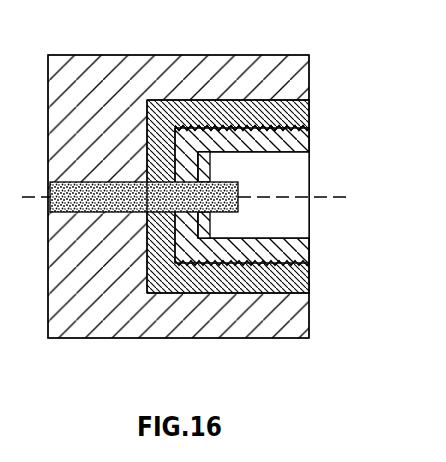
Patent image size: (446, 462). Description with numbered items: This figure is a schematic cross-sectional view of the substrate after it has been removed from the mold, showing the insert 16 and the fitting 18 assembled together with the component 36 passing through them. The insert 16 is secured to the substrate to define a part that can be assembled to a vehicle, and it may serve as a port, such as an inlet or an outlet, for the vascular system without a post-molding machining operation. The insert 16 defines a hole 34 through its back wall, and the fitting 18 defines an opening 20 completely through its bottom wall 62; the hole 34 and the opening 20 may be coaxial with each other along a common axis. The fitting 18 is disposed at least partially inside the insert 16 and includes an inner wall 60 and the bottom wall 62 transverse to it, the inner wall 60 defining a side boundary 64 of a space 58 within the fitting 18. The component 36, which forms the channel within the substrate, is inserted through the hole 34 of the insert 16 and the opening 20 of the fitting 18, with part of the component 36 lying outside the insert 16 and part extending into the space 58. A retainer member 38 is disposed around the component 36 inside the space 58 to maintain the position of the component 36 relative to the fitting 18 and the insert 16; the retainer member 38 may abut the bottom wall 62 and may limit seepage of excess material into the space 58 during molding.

The insert 16 is at (173, 120).
The fitting 18 is at (210, 135).
The opening 20 is at (207, 254).
The hole 34 is at (157, 213).
The component 36 is at (51, 213).
The retainer member 38 is at (212, 157).
The space 58 is at (285, 210).
The inner wall 60 is at (303, 140).
The side boundary 64 is at (303, 140).
The bottom wall 62 is at (185, 167).